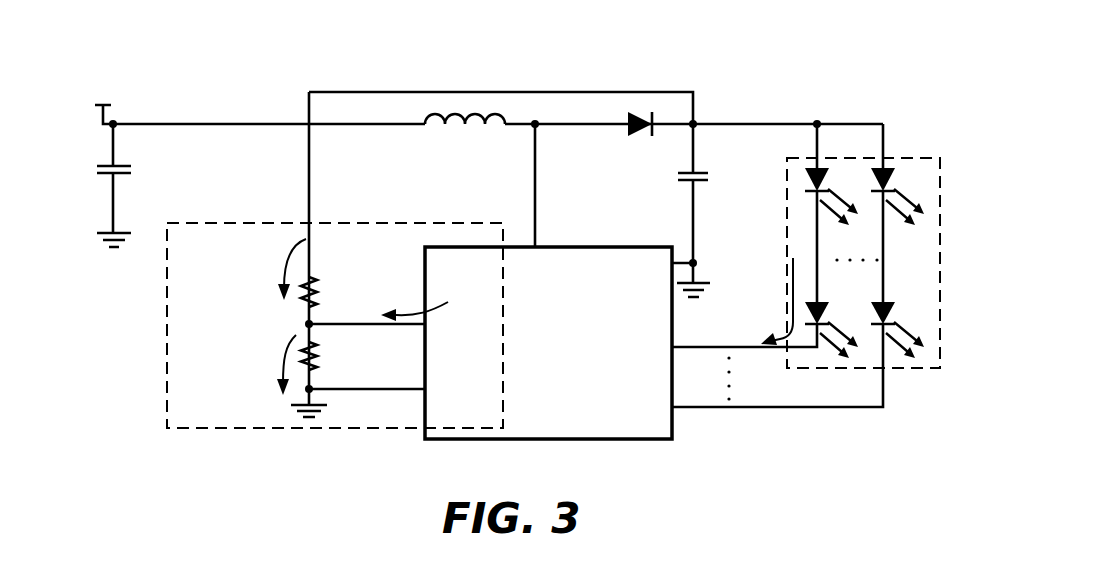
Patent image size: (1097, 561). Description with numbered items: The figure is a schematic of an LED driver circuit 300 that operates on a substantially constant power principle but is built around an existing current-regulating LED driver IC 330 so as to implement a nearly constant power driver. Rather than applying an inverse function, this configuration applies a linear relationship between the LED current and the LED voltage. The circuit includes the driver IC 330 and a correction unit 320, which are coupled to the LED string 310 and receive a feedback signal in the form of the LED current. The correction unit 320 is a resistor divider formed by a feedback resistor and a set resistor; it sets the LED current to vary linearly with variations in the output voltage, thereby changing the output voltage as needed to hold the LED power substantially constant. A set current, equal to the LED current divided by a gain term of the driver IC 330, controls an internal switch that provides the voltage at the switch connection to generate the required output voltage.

The LED driver circuit 300 is at (752, 45).
The LED string 310 is at (909, 157).
The correction unit 320 is at (237, 222).
The current regulating driver IC 330 is at (528, 390).